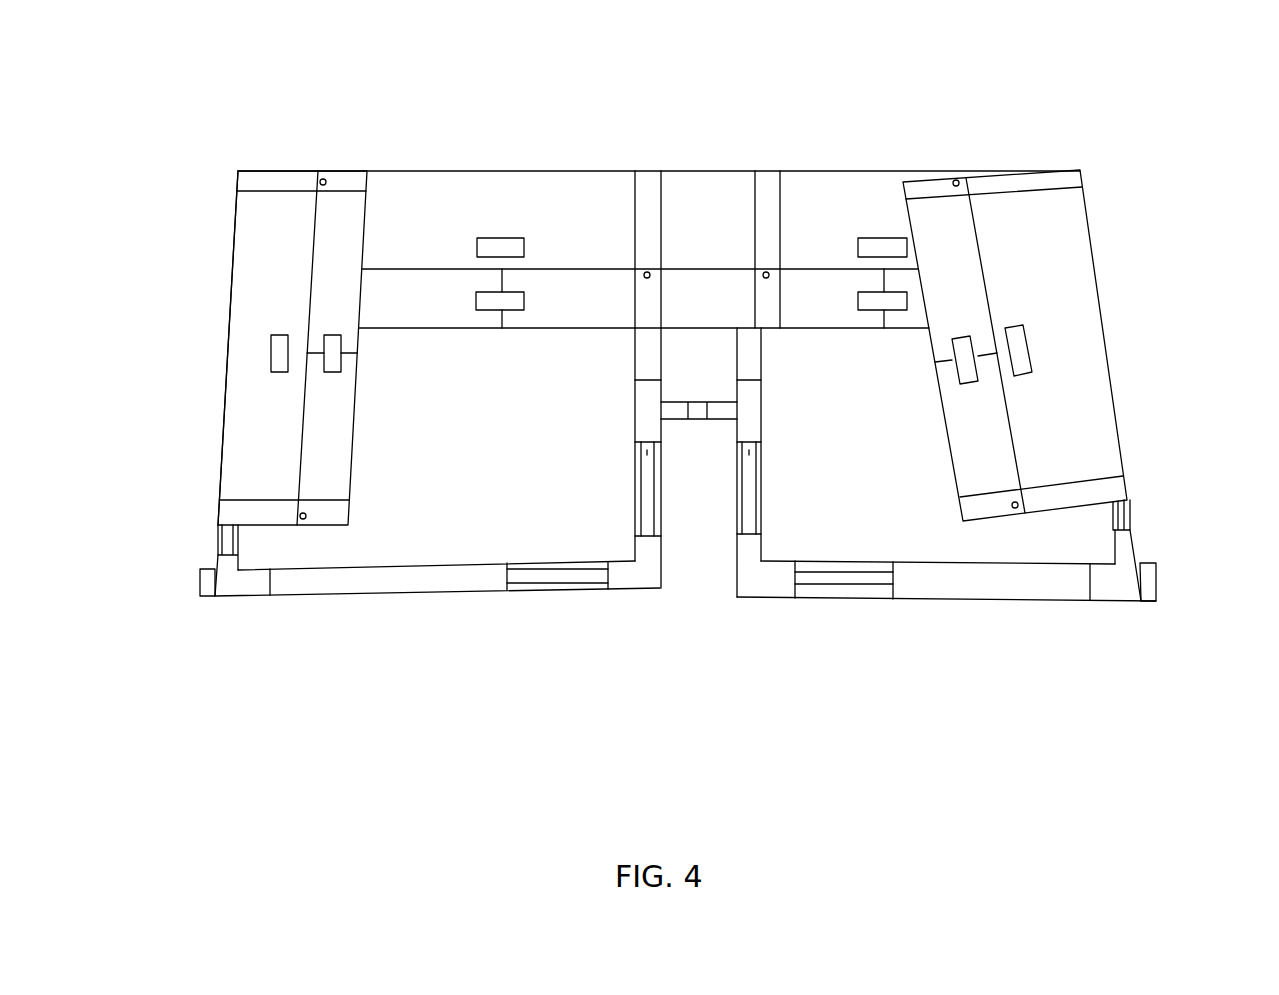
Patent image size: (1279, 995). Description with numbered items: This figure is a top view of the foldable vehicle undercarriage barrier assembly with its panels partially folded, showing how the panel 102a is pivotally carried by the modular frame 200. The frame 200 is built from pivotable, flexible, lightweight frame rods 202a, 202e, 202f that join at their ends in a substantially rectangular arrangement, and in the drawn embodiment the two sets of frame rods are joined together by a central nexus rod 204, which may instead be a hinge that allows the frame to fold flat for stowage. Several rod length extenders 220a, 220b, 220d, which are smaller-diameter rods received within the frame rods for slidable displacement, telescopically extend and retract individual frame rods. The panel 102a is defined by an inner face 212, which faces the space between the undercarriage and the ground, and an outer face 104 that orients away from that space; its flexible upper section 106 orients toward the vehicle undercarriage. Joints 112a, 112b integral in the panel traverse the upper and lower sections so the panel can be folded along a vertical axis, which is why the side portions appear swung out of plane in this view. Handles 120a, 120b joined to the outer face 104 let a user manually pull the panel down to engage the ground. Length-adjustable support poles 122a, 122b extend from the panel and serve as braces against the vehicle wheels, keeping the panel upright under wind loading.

The frame 200 is at (440, 68).
The panel 102a is at (190, 216).
The outer face 104 is at (265, 452).
The upper section 106 is at (708, 200).
The joint 112a is at (1110, 363).
The joint 112b is at (222, 358).
The handle 120a is at (955, 345).
The handle 120b is at (335, 352).
The support pole 122a is at (1155, 577).
The support pole 122b is at (200, 582).
The frame rod 202a is at (425, 600).
The frame rod 202e is at (927, 590).
The frame rod 202f is at (763, 363).
The nexus rod 204 is at (693, 422).
The inner face 212 is at (430, 200).
The rod length extender 220a is at (545, 578).
The rod length extender 220b is at (838, 578).
The rod length extender 220d is at (647, 409).